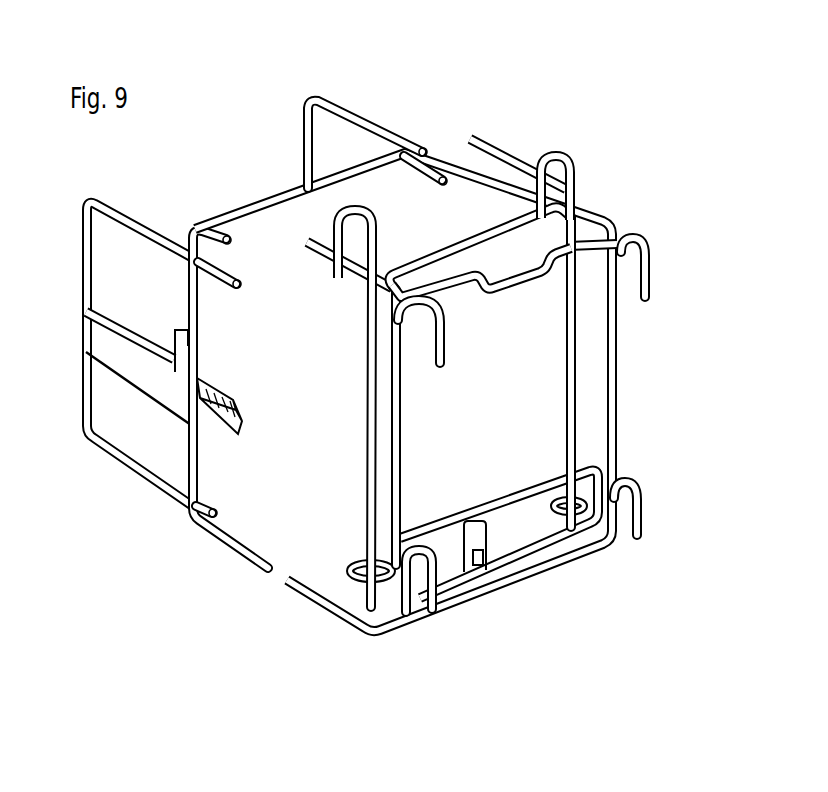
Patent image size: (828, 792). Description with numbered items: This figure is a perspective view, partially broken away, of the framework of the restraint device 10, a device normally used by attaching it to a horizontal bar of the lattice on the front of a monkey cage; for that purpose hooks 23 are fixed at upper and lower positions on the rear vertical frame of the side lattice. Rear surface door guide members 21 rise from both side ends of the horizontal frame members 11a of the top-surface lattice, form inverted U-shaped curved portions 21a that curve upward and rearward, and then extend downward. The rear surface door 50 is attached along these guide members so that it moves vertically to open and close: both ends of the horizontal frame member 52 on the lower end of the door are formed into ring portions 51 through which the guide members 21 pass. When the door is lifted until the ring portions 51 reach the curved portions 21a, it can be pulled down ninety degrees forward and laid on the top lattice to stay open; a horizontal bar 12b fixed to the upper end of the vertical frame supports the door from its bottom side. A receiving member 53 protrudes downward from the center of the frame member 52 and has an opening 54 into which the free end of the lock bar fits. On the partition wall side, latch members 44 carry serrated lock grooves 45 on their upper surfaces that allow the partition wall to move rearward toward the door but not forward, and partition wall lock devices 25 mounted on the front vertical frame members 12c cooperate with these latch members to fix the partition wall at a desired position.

The restraint device 10 is at (533, 80).
The horizontal frame members 11a is at (492, 160).
The horizontal bar 12b is at (578, 233).
The vertical frame members 12c is at (163, 385).
The rear surface door guide members 21 is at (371, 433).
The curved portions 21a is at (368, 220).
The hooks 23 is at (443, 337).
The partition wall lock devices 25 is at (173, 332).
The latch members 44 is at (128, 355).
The lock grooves 45 is at (222, 387).
The rear surface door 50 is at (474, 527).
The ring portions 51 is at (358, 578).
The horizontal frame member 52 is at (547, 523).
The receiving member 53 is at (481, 575).
The opening 54 is at (481, 528).